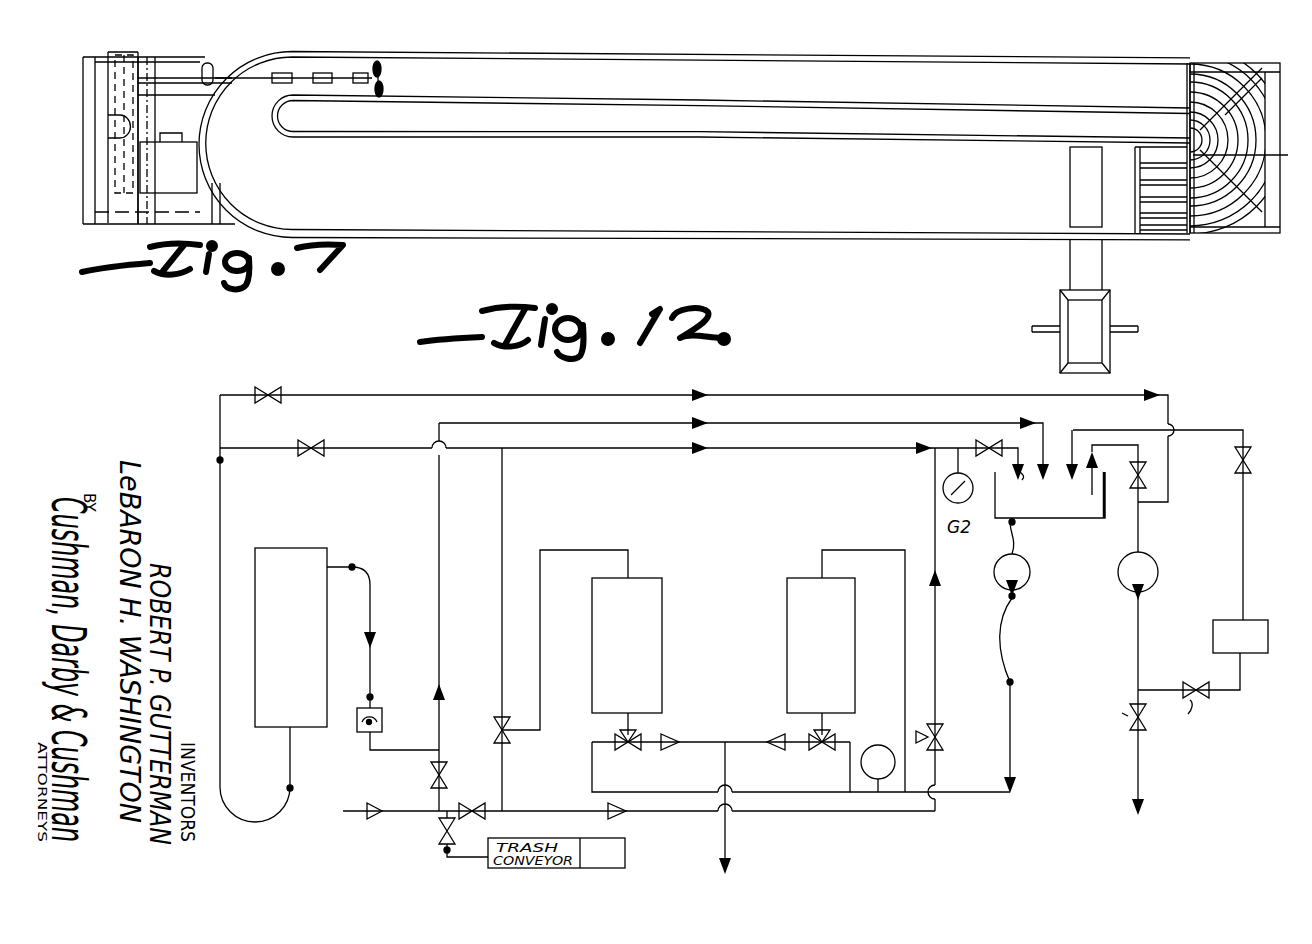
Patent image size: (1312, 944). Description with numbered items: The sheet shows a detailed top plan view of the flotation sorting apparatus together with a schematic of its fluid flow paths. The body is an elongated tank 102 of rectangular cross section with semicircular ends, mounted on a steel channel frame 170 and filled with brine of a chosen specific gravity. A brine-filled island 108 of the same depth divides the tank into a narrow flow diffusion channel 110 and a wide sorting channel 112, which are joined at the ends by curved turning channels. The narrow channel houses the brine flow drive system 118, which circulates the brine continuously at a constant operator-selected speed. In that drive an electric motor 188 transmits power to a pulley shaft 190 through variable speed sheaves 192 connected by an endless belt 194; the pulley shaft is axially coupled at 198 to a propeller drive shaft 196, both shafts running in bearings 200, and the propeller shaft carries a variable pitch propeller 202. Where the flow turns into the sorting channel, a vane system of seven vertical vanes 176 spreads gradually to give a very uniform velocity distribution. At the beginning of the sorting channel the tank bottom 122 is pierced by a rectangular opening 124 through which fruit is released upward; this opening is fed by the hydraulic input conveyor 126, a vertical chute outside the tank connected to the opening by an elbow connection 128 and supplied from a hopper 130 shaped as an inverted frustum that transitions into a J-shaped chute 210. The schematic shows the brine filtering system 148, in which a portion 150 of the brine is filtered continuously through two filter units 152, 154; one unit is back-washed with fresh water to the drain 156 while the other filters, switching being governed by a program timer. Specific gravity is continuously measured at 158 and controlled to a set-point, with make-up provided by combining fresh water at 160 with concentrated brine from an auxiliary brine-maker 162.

In FIG. 7, the tank 102 is at (755, 236).
In FIG. 12, the tank 102 is at (1063, 520).
In FIG. 7, the island 108 is at (712, 131).
In FIG. 7, the narrow flow diffusion channel 110 is at (698, 86).
In FIG. 7, the sorting channel 112 is at (627, 217).
In FIG. 7, the brine flow drive system 118 is at (104, 172).
In FIG. 7, the tank bottom 122 is at (700, 210).
In FIG. 7, the rectangular opening 124 is at (1075, 202).
In FIG. 7, the hydraulic input conveyor 126 is at (1103, 273).
In FIG. 7, the elbow connection 128 is at (1070, 268).
In FIG. 7, the hopper 130 is at (1112, 355).
In FIG. 12, the brine filtering system 148 is at (733, 530).
In FIG. 12, the portion of the brine 150 is at (1012, 738).
In FIG. 12, the filter unit 152 is at (662, 620).
In FIG. 12, the filter unit 154 is at (800, 620).
In FIG. 12, the drain 156 is at (730, 868).
In FIG. 12, the specific gravity measurement point 158 is at (1258, 645).
In FIG. 12, the fresh water supply 160 is at (413, 853).
In FIG. 12, the auxiliary brine-maker 162 is at (302, 548).
In FIG. 7, the steel channel frame 170 is at (90, 228).
In FIG. 7, the vertical vanes 176 is at (1212, 231).
In FIG. 7, the electric motor 188 is at (190, 190).
In FIG. 7, the pulley shaft 190 is at (188, 78).
In FIG. 7, the variable speed sheaves 192 is at (108, 46).
In FIG. 7, the endless belt 194 is at (123, 127).
In FIG. 7, the propeller drive shaft 196 is at (322, 84).
In FIG. 7, the coupling 198 is at (280, 85).
In FIG. 7, the bearings 200 is at (150, 73).
In FIG. 7, the variable pitch propeller 202 is at (385, 68).
In FIG. 7, the chute 210 is at (1078, 316).